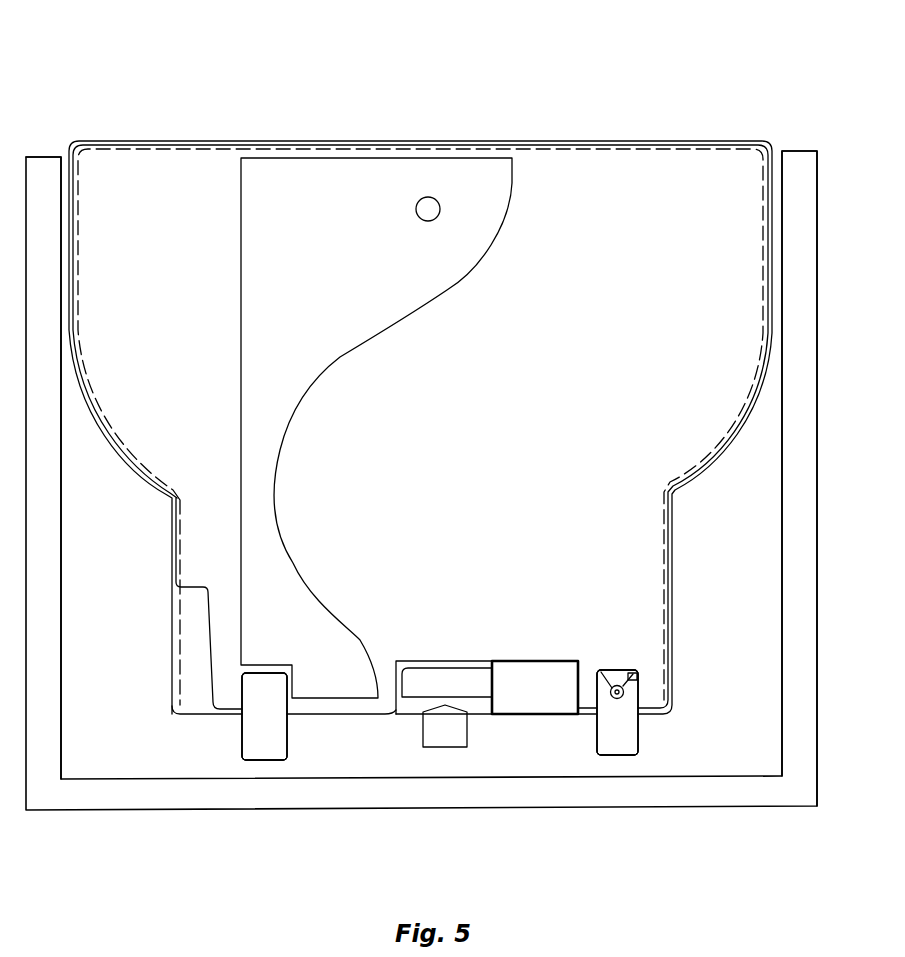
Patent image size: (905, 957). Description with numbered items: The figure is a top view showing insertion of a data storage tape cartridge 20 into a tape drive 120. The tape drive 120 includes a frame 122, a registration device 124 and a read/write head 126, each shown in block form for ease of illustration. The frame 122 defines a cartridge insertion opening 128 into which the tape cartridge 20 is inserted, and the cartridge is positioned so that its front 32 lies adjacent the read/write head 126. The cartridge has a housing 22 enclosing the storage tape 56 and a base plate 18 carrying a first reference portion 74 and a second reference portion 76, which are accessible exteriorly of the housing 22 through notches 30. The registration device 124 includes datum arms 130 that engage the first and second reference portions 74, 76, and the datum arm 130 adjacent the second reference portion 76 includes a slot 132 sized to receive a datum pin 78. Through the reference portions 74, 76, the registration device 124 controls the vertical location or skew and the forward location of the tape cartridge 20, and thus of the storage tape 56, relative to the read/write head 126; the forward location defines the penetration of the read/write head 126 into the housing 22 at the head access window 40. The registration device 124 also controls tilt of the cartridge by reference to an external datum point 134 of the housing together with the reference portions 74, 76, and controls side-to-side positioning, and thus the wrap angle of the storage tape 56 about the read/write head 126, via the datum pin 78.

The base plate 18 is at (610, 672).
The data storage tape cartridge 20 is at (574, 140).
The housing 22 is at (688, 438).
The notches 30 is at (612, 675).
The front 32 is at (372, 717).
The head access window 40 is at (418, 660).
The storage tape 56 is at (465, 696).
The first reference portion 74 is at (262, 671).
The second reference portion 76 is at (636, 683).
The datum pin 78 is at (620, 695).
The tape drive 120 is at (152, 822).
The frame 122 is at (781, 602).
The registration device 124 is at (268, 764).
The read/write head 126 is at (444, 740).
The cartridge insertion opening 128 is at (42, 164).
The datum arms 130 is at (250, 746).
The slot 132 is at (616, 678).
The external datum point 134 is at (418, 216).